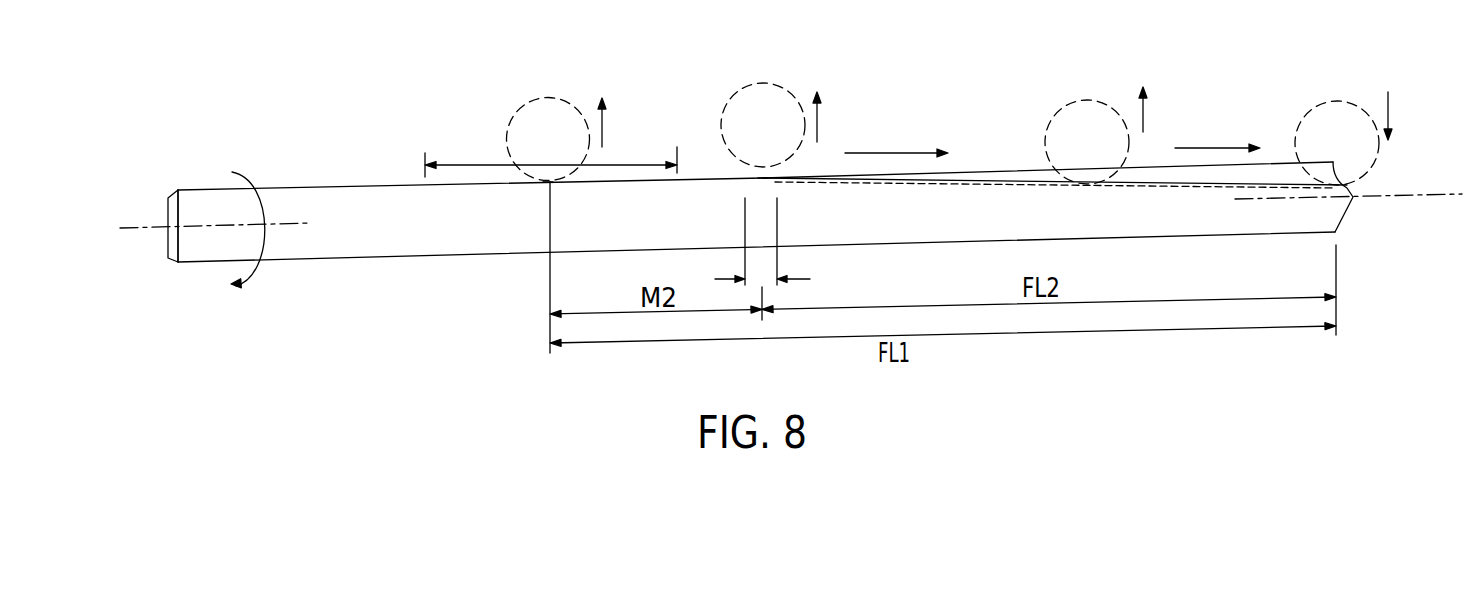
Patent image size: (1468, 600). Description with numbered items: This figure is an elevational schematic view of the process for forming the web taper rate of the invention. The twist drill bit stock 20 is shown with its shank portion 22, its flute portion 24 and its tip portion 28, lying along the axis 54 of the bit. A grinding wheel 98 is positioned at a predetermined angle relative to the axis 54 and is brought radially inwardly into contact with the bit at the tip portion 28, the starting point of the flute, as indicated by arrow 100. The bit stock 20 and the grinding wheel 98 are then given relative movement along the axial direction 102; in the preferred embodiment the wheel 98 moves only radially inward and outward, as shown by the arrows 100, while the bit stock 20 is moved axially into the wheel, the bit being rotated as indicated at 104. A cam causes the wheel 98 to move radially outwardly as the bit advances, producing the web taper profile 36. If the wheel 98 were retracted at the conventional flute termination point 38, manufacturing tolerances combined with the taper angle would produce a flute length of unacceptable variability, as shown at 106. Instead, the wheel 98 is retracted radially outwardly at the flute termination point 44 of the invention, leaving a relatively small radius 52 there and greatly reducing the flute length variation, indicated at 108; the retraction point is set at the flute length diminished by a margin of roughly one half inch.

The twist drill 20 is at (364, 130).
The shank portion 22 is at (409, 249).
The flute portion 24 is at (995, 224).
The tip portion 28 is at (1341, 216).
The web taper profile 36 is at (966, 184).
The conventional flute termination point 38 is at (548, 183).
The flute termination point 44 is at (762, 178).
The small radius 52 is at (768, 179).
The axis 54 is at (143, 222).
The grinding wheel 98 is at (533, 97).
The arrow 100 is at (603, 122).
The axial direction 102 is at (915, 152).
The rotation direction of blank 104 is at (257, 270).
The breadth of variability 106 is at (468, 165).
The dwell / offset distance 108 is at (783, 246).